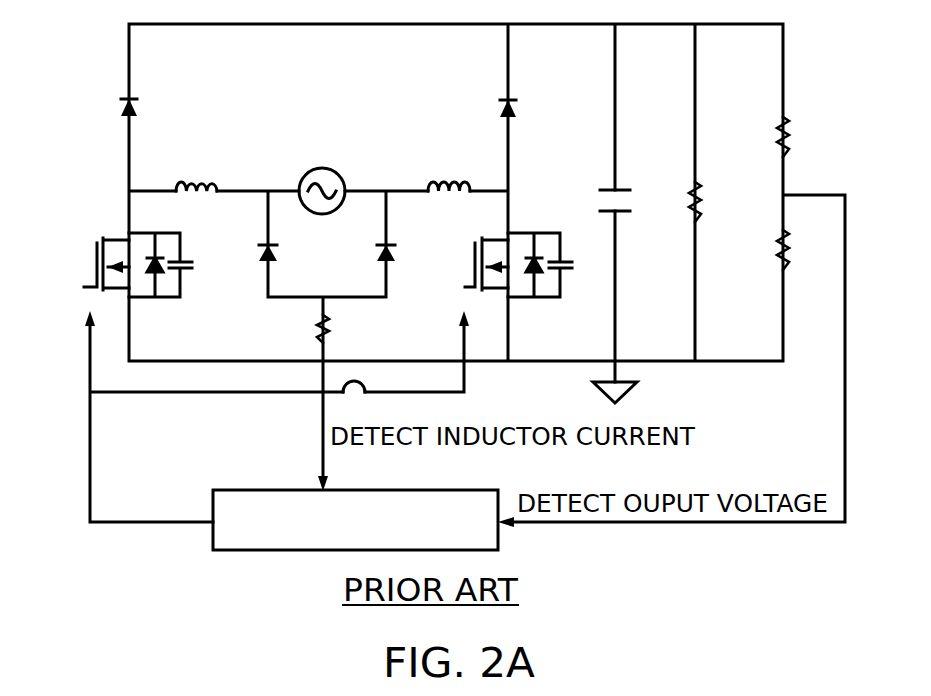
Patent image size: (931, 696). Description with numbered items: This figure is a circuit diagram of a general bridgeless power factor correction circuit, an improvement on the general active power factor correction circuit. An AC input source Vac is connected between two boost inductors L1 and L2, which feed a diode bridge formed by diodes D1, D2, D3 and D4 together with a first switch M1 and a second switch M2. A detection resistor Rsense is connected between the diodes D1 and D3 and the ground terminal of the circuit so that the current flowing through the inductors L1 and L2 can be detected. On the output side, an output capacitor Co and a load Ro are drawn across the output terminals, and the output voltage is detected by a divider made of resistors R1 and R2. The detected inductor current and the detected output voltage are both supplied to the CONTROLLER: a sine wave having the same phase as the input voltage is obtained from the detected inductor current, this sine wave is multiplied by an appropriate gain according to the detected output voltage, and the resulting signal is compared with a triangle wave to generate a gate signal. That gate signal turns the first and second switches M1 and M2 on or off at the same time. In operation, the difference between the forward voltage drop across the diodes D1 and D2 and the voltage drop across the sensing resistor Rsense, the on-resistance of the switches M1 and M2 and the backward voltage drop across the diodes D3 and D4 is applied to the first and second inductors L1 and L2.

The diode D1 is at (252, 252).
The diode D2 is at (489, 110).
The diode D3 is at (366, 252).
The diode D4 is at (108, 105).
The boost inductor L1 is at (449, 170).
The boost inductor L2 is at (196, 170).
The AC input voltage source Vac is at (323, 177).
The first switch M1 is at (498, 265).
The second switch M2 is at (118, 265).
The detection resistor Rsense is at (288, 328).
The output capacitor Co is at (631, 203).
The output load resistor Ro is at (712, 202).
The resistor R1 is at (799, 137).
The resistor R2 is at (801, 250).
The controller CONTROLLER is at (355, 520).